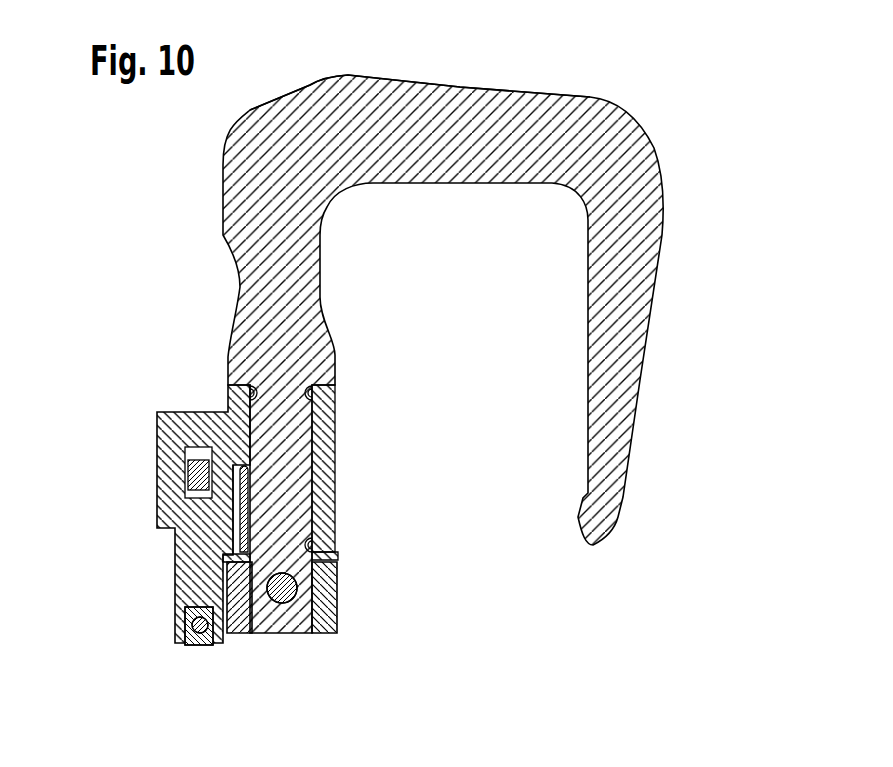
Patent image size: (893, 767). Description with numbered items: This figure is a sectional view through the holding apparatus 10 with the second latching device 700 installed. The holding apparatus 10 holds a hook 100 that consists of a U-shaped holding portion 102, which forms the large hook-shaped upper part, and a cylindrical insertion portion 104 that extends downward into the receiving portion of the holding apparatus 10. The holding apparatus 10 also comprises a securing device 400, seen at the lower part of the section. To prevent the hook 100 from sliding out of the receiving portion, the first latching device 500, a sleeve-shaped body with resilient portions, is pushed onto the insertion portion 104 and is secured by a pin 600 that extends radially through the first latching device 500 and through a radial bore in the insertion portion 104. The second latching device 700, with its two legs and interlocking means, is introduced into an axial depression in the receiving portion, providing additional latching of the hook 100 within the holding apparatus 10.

The holding apparatus 10 is at (157, 418).
The hook 100 is at (640, 247).
The U-shaped holding portion 102 is at (503, 125).
The cylindrical insertion portion 104 is at (262, 451).
The securing device 400 is at (203, 647).
The first latching device 500 is at (327, 618).
The pin 600 is at (275, 604).
The second latching device 700 is at (237, 522).